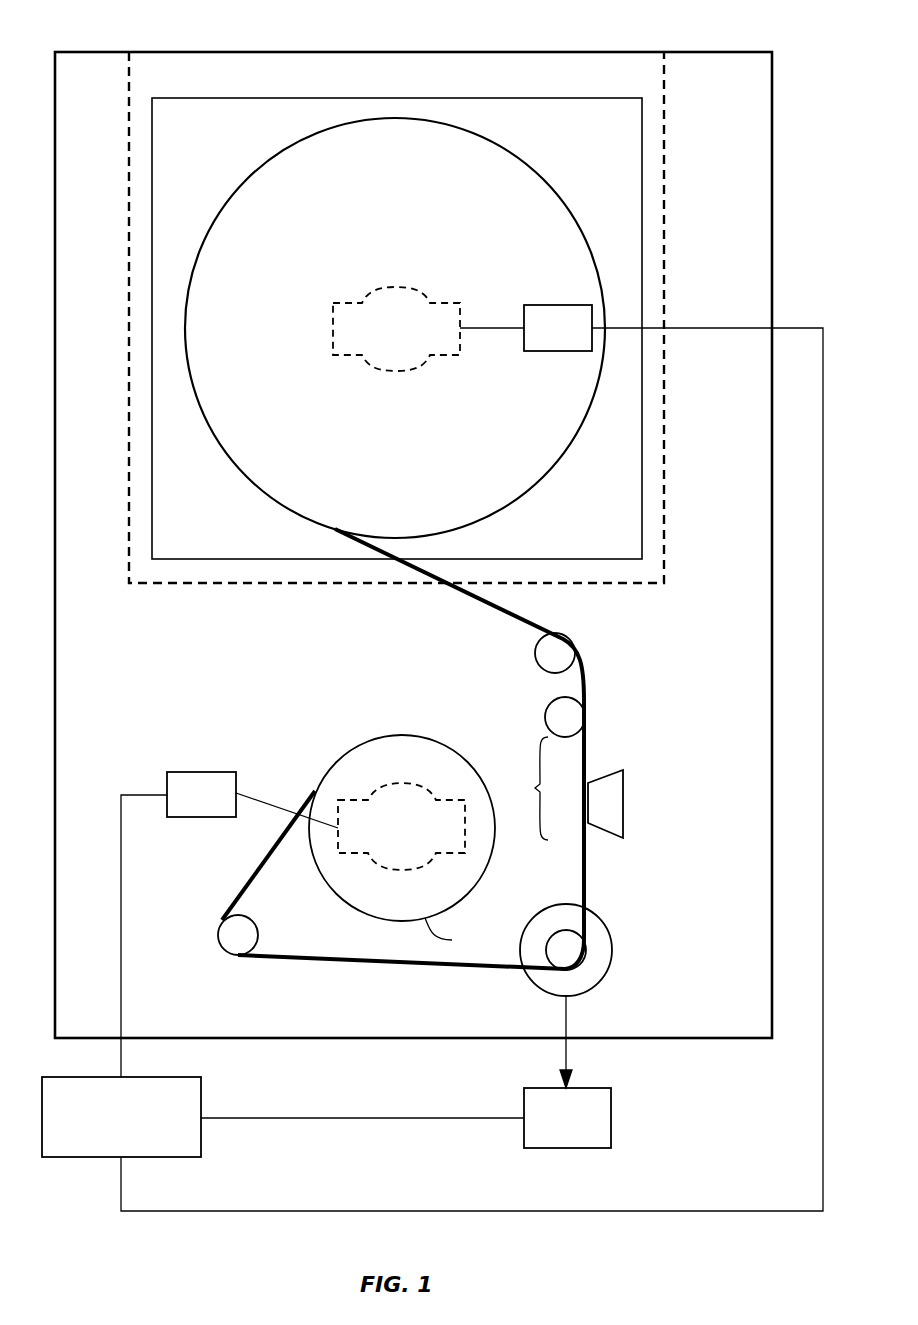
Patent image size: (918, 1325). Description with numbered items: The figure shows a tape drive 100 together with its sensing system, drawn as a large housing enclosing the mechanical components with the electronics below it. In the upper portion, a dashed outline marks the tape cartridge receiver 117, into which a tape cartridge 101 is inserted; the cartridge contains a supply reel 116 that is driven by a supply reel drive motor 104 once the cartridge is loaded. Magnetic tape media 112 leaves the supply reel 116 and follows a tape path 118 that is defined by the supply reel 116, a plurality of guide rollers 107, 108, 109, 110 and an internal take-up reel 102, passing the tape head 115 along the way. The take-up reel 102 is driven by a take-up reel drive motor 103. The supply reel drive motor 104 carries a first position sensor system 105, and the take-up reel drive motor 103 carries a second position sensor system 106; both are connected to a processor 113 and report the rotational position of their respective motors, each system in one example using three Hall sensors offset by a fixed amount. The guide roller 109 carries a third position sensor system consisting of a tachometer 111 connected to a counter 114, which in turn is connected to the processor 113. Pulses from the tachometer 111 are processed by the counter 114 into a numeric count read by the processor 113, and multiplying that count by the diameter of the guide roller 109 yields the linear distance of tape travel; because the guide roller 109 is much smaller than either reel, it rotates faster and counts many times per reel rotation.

The tape drive 100 is at (772, 135).
The tape cartridge 101 is at (585, 98).
The take-up reel 102 is at (358, 740).
The take-up reel drive motor 103 is at (409, 785).
The supply reel drive motor 104 is at (395, 372).
The first position sensor system 105 is at (578, 340).
The second position sensor system 106 is at (221, 806).
The guide roller 107 is at (574, 646).
The guide roller 108 is at (585, 710).
The guide roller 109 is at (586, 960).
The guide roller 110 is at (228, 948).
The tachometer 111 is at (603, 930).
The magnetic tape media 112 is at (584, 860).
The processor 113 is at (141, 1130).
The counter 114 is at (588, 1130).
The tape head 115 is at (623, 795).
The supply reel 116 is at (552, 470).
The tape cartridge receiver 117 is at (180, 583).
The tape path 118 is at (518, 788).